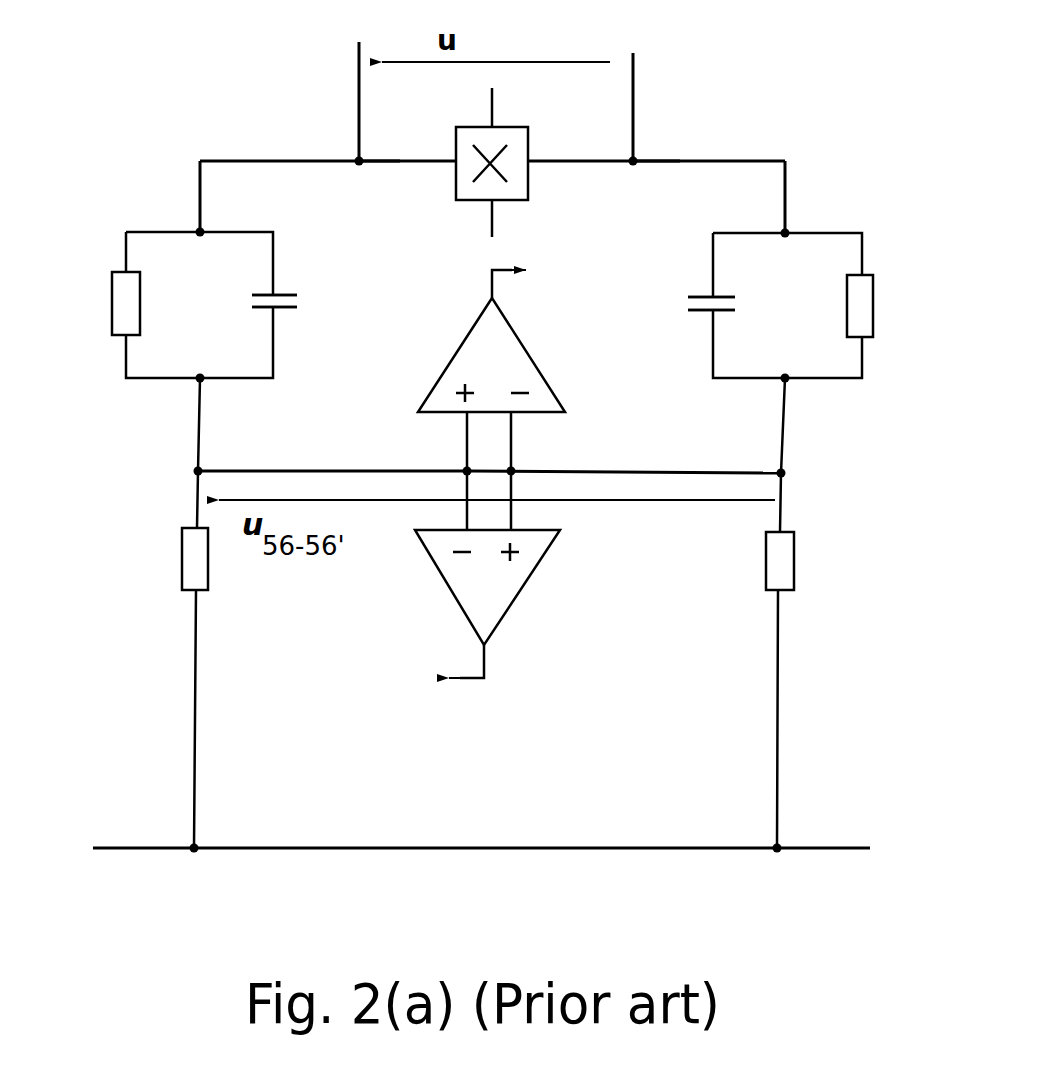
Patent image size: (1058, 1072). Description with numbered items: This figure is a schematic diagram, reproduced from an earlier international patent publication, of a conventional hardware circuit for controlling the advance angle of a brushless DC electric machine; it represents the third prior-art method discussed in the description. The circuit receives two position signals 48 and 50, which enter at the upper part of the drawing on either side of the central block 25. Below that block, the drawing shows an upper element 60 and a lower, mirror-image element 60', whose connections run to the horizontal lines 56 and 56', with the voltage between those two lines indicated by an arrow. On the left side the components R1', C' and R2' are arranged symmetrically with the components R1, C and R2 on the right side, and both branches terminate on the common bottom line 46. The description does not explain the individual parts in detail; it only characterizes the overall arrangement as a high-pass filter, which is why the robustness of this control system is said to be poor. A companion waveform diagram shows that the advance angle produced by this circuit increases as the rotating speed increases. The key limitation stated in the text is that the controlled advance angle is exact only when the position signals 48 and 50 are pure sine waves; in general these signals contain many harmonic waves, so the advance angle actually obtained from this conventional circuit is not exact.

The multiplier / mixer 25 is at (528, 138).
The position signal 50 is at (393, 163).
The position signal 48 is at (660, 163).
The differential amplifier 60 is at (517, 370).
The second differential amplifier 60' is at (507, 574).
The node line 56 is at (665, 474).
The node line (primed) 56' is at (290, 474).
The ground / common line 46 is at (573, 848).
The resistor R1 is at (902, 306).
The resistor R1' is at (90, 311).
The resistor R2 is at (824, 561).
The resistor R2' is at (154, 565).
The capacitor C is at (734, 286).
The capacitor C' is at (231, 314).